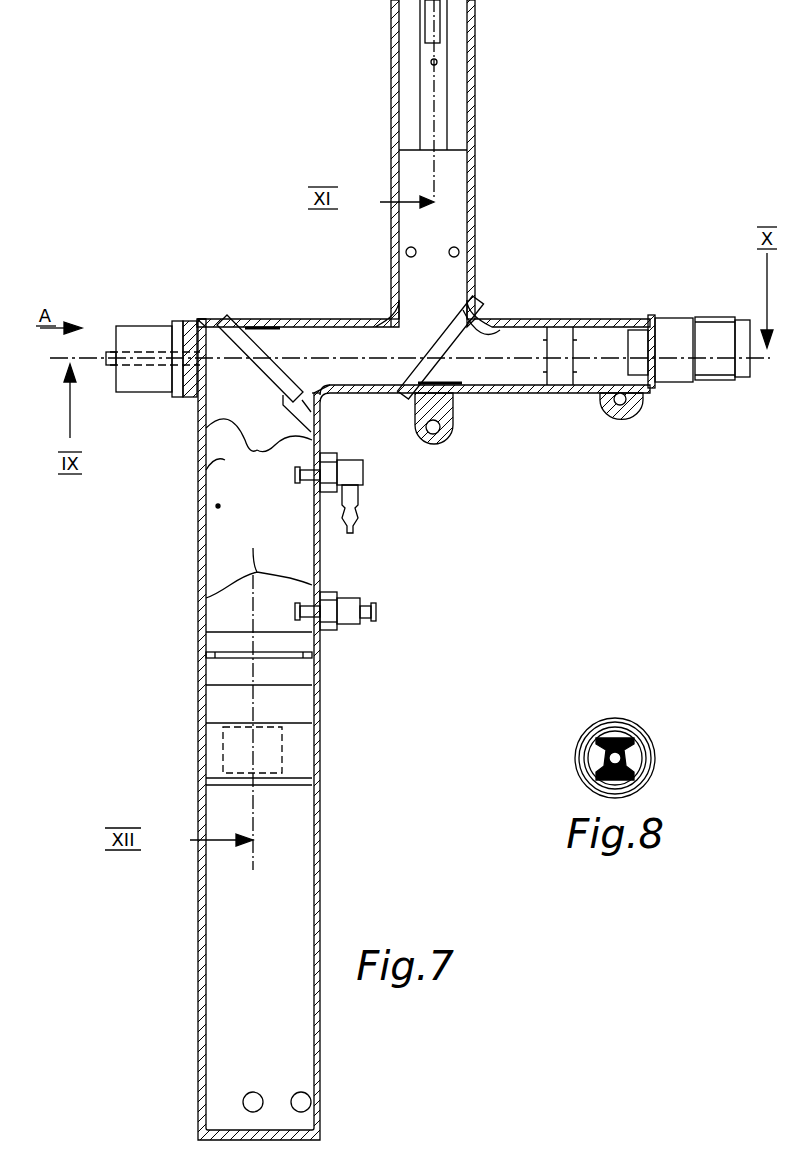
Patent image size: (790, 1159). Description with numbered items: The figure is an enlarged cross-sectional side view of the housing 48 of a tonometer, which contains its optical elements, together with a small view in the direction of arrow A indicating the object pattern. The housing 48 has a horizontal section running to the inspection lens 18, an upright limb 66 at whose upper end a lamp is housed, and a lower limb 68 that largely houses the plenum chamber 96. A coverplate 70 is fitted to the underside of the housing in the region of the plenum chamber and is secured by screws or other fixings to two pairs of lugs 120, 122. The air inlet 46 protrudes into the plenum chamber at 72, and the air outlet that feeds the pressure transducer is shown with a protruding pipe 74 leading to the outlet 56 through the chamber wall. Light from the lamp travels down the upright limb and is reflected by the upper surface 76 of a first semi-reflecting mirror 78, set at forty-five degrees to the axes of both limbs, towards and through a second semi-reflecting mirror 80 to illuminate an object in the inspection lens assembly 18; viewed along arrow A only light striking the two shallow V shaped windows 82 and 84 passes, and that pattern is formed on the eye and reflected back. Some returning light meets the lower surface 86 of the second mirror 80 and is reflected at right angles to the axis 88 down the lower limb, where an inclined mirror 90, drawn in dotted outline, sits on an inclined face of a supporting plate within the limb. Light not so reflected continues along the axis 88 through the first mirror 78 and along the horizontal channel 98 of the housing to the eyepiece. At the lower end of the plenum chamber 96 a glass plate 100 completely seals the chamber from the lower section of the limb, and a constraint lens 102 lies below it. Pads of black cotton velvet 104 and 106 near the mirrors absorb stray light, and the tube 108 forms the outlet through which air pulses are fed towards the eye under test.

In FIG. 7, the inspection lens 18 is at (133, 393).
In FIG. 7, the air inlet 46 is at (338, 597).
In FIG. 7, the housing 48 is at (199, 306).
In FIG. 7, the outlet 56 is at (342, 460).
In FIG. 7, the upright limb 66 is at (475, 157).
In FIG. 7, the lower limb 68 is at (322, 813).
In FIG. 7, the coverplate 70 is at (218, 506).
In FIG. 7, the protruding air inlet 72 is at (320, 655).
In FIG. 7, the protruding pipe 74 is at (305, 483).
In FIG. 7, the upper surface of first semi-reflecting mirror 76 is at (468, 298).
In FIG. 7, the first semi-reflecting mirror 78 is at (503, 316).
In FIG. 7, the second semi-reflecting mirror 80 is at (297, 330).
In FIG. 8, the shallow V shaped window 82 is at (632, 752).
In FIG. 8, the shallow V shaped window 84 is at (598, 752).
In FIG. 7, the lower surface of second semi-reflecting mirror 86 is at (206, 422).
In FIG. 7, the axis 88 is at (344, 338).
In FIG. 7, the inclined mirror 90 is at (282, 752).
In FIG. 7, the plenum chamber 96 is at (212, 454).
In FIG. 7, the horizontal channel 98 is at (368, 335).
In FIG. 7, the glass plate 100 is at (218, 644).
In FIG. 7, the constraint lens 102 is at (237, 685).
In FIG. 7, the pad of black cotton velvet 104 is at (452, 405).
In FIG. 7, the pad of black cotton velvet 106 is at (268, 319).
In FIG. 7, the tube 108 is at (108, 350).
In FIG. 7, the pair of lugs 120 is at (259, 695).
In FIG. 7, the pair of lugs 122 is at (274, 459).